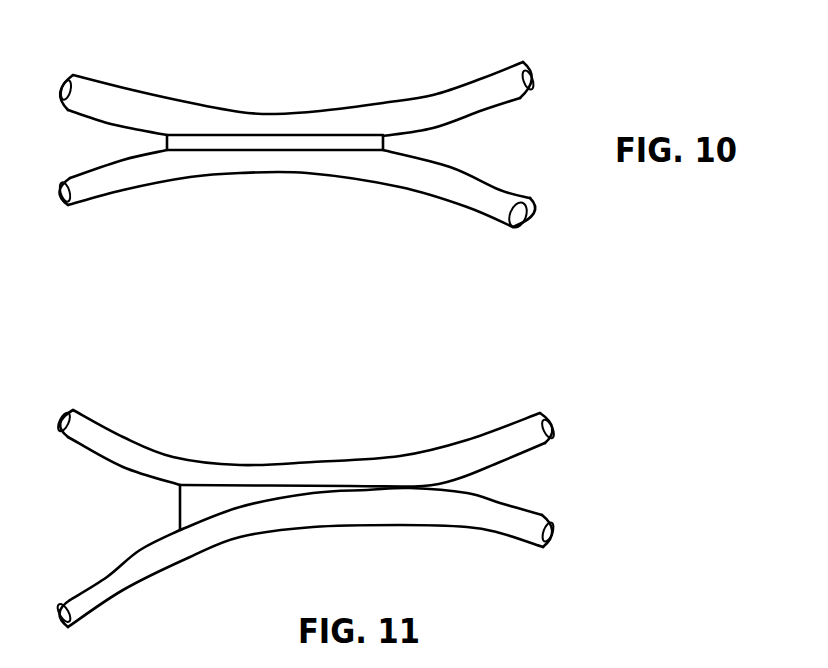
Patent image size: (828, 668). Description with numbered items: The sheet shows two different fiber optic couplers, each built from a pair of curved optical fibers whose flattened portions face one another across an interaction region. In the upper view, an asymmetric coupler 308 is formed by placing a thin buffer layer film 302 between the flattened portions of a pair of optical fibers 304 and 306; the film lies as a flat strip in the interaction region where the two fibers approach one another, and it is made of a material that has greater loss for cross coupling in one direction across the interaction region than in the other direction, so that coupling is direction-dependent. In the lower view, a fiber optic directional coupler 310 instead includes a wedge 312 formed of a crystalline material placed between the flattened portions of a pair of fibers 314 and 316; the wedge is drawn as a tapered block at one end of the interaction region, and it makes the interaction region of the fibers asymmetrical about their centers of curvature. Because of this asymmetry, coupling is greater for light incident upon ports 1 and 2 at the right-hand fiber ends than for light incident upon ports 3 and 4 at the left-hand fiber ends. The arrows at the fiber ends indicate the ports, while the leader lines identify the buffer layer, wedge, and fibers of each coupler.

In FIG. 10, the port 1 is at (469, 65).
In FIG. 11, the port 1 is at (480, 424).
In FIG. 10, the port 2 is at (441, 221).
In FIG. 11, the port 2 is at (515, 566).
In FIG. 10, the port 3 is at (62, 206).
In FIG. 11, the port 3 is at (63, 627).
In FIG. 10, the port 4 is at (66, 77).
In FIG. 11, the port 4 is at (64, 408).
In FIG. 10, the buffer layer film 302 is at (280, 151).
In FIG. 10, the optical fiber 304 is at (298, 81).
In FIG. 10, the optical fiber 306 is at (293, 207).
In FIG. 10, the asymmetric coupler 308 is at (295, 137).
In FIG. 11, the fiber optic directional coupler 310 is at (321, 516).
In FIG. 11, the wedge 312 is at (211, 487).
In FIG. 11, the fiber 314 is at (306, 433).
In FIG. 11, the fiber 316 is at (321, 571).